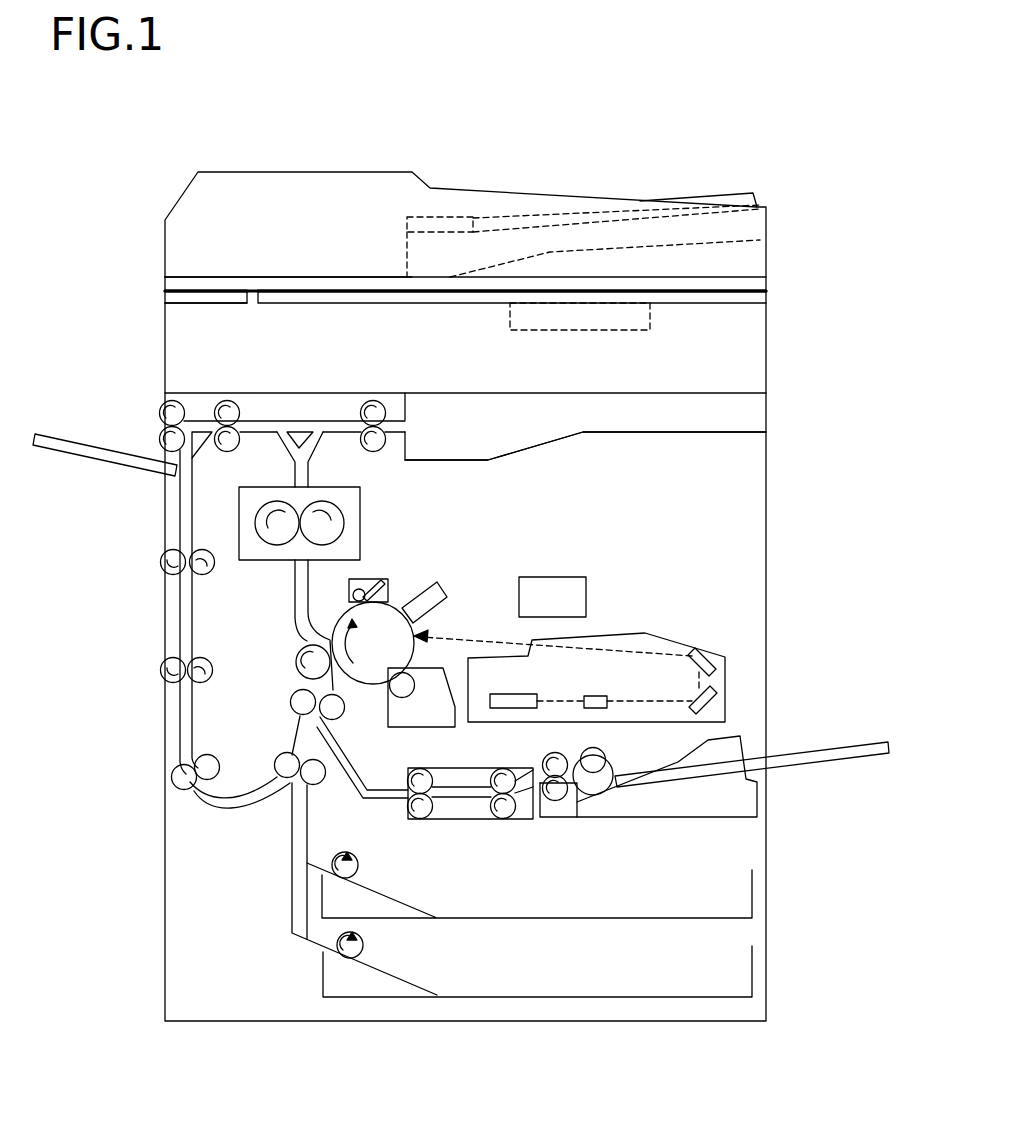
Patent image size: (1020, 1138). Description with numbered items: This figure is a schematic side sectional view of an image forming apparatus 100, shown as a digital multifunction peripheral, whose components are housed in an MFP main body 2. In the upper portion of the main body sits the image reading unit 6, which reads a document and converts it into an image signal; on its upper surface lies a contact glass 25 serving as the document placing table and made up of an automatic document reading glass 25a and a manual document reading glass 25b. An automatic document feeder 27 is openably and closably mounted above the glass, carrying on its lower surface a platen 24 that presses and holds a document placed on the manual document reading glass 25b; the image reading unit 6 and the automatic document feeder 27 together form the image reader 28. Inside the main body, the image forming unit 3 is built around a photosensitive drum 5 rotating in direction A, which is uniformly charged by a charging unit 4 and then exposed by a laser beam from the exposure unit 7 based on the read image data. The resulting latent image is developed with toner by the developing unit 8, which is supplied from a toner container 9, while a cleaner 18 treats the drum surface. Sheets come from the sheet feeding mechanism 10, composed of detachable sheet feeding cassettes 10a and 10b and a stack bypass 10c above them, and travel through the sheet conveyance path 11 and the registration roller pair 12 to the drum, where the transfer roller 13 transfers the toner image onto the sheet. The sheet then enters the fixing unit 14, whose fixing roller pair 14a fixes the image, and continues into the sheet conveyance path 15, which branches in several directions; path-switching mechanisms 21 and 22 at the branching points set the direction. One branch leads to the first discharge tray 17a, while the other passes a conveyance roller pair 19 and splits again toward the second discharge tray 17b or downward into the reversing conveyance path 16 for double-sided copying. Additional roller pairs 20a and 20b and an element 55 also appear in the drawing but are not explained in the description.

The image forming apparatus 100 is at (682, 159).
The MFP main body 2 is at (766, 492).
The image forming unit 3 is at (430, 557).
The charging unit 4 is at (432, 598).
The photosensitive drum 5 is at (360, 668).
The image reading unit 6 is at (178, 347).
The exposure unit 7 is at (623, 643).
The developing unit 8 is at (420, 710).
The toner container 9 is at (555, 588).
The sheet feeding mechanism 10 is at (788, 844).
The sheet feeding cassette 10a is at (737, 900).
The sheet feeding cassette 10b is at (742, 978).
The stack bypass 10c is at (792, 746).
The sheet conveyance path 11 is at (295, 812).
The registration roller pair 12 is at (295, 720).
The transfer roller 13 is at (297, 660).
The fixing unit 14 is at (238, 520).
The fixing roller pair 14a is at (343, 510).
The sheet conveyance path 15 is at (287, 466).
The reversing conveyance path 16 is at (180, 603).
The first discharge tray 17a is at (585, 436).
The second discharge tray 17b is at (80, 446).
The cleaner 18 is at (369, 579).
The conveyance roller pair 19 is at (224, 406).
The discharge roller pair 20a is at (381, 424).
The side discharge roller pair 20b is at (157, 424).
The path-switching mechanism 21 is at (298, 428).
The path-switching mechanism 22 is at (187, 460).
The platen 24 is at (767, 280).
The contact glass 25 is at (337, 225).
The automatic document reading glass 25a is at (205, 296).
The manual document reading glass 25b is at (357, 297).
The automatic document feeder 27 is at (197, 230).
The image reader 28 is at (78, 260).
The controller 55 is at (578, 330).